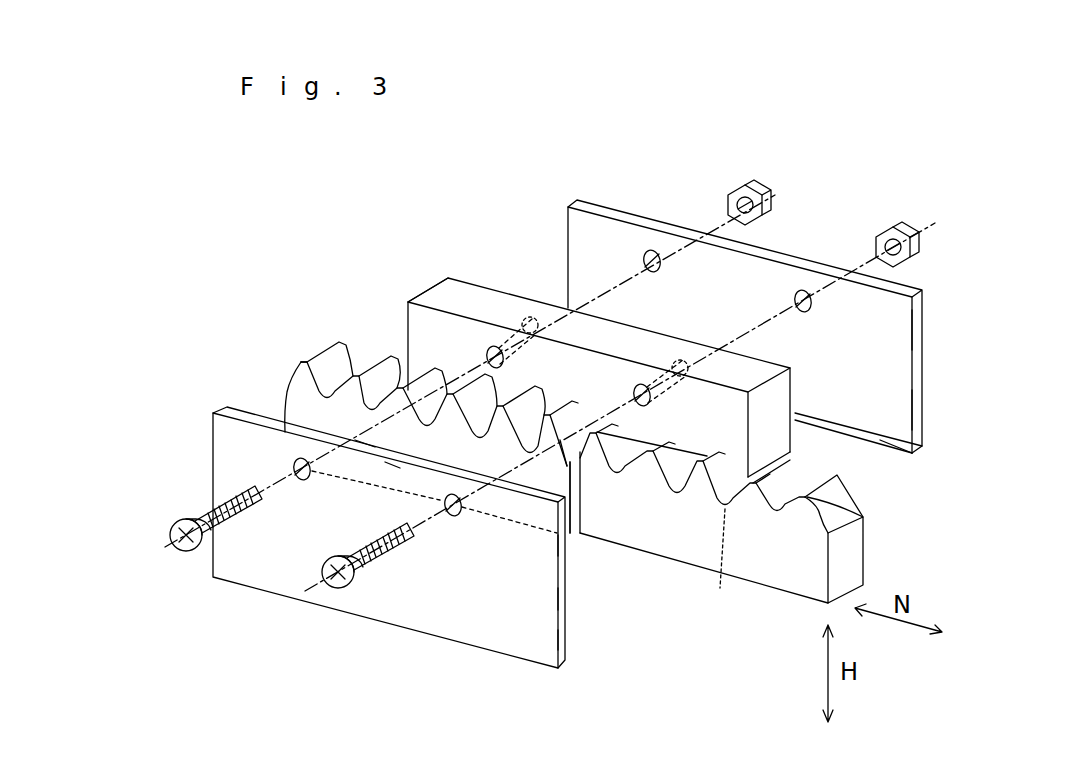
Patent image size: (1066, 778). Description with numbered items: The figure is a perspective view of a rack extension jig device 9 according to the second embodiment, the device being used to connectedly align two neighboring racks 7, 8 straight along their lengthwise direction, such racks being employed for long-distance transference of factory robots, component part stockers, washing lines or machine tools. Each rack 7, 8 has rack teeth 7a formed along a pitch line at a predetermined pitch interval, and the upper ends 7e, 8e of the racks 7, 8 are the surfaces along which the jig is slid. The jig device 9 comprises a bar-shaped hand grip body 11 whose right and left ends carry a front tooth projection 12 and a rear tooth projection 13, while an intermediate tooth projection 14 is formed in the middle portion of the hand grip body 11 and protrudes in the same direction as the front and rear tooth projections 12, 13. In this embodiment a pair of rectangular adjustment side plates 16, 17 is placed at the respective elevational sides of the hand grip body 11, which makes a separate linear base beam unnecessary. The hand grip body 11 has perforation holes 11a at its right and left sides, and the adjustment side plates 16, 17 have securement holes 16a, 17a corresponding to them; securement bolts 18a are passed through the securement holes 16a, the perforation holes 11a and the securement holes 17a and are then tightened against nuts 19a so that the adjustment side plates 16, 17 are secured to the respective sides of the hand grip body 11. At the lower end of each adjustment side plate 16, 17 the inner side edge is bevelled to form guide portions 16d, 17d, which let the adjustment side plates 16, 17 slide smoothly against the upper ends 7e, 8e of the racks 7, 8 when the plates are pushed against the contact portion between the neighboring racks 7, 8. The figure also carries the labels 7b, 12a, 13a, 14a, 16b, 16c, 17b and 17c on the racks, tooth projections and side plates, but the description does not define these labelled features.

The rack 7 is at (319, 425).
The rack teeth 7a is at (383, 373).
The end portion of first strip 7b is at (773, 503).
The upper end of rack 7e is at (302, 362).
The rack 8 is at (771, 567).
The upper end of rack 8e is at (658, 482).
The rack extension jig device 9 is at (436, 262).
The hand grip body 11 is at (464, 286).
The perforation holes 11a is at (646, 404).
The front tooth projection 12 is at (368, 447).
The surface of holder 12a is at (394, 467).
The rear tooth projection 13 is at (727, 481).
The surface of lower block 13a is at (715, 566).
The intermediate tooth projection 14 is at (565, 447).
The end face of intermediate member 14a is at (583, 508).
The adjustment side plate 16 is at (640, 562).
The securement holes 16a is at (452, 517).
The surface of front plate 16b is at (560, 547).
The surface of front plate 16c is at (560, 598).
The guide portion 16d is at (553, 640).
The adjustment side plate 17 is at (1000, 318).
The securement holes 17a is at (807, 311).
The surface of rear plate 17b is at (904, 329).
The surface of rear plate 17c is at (904, 411).
The guide portion 17d is at (906, 454).
The securement bolts 18a is at (374, 590).
The nuts 19a is at (912, 235).